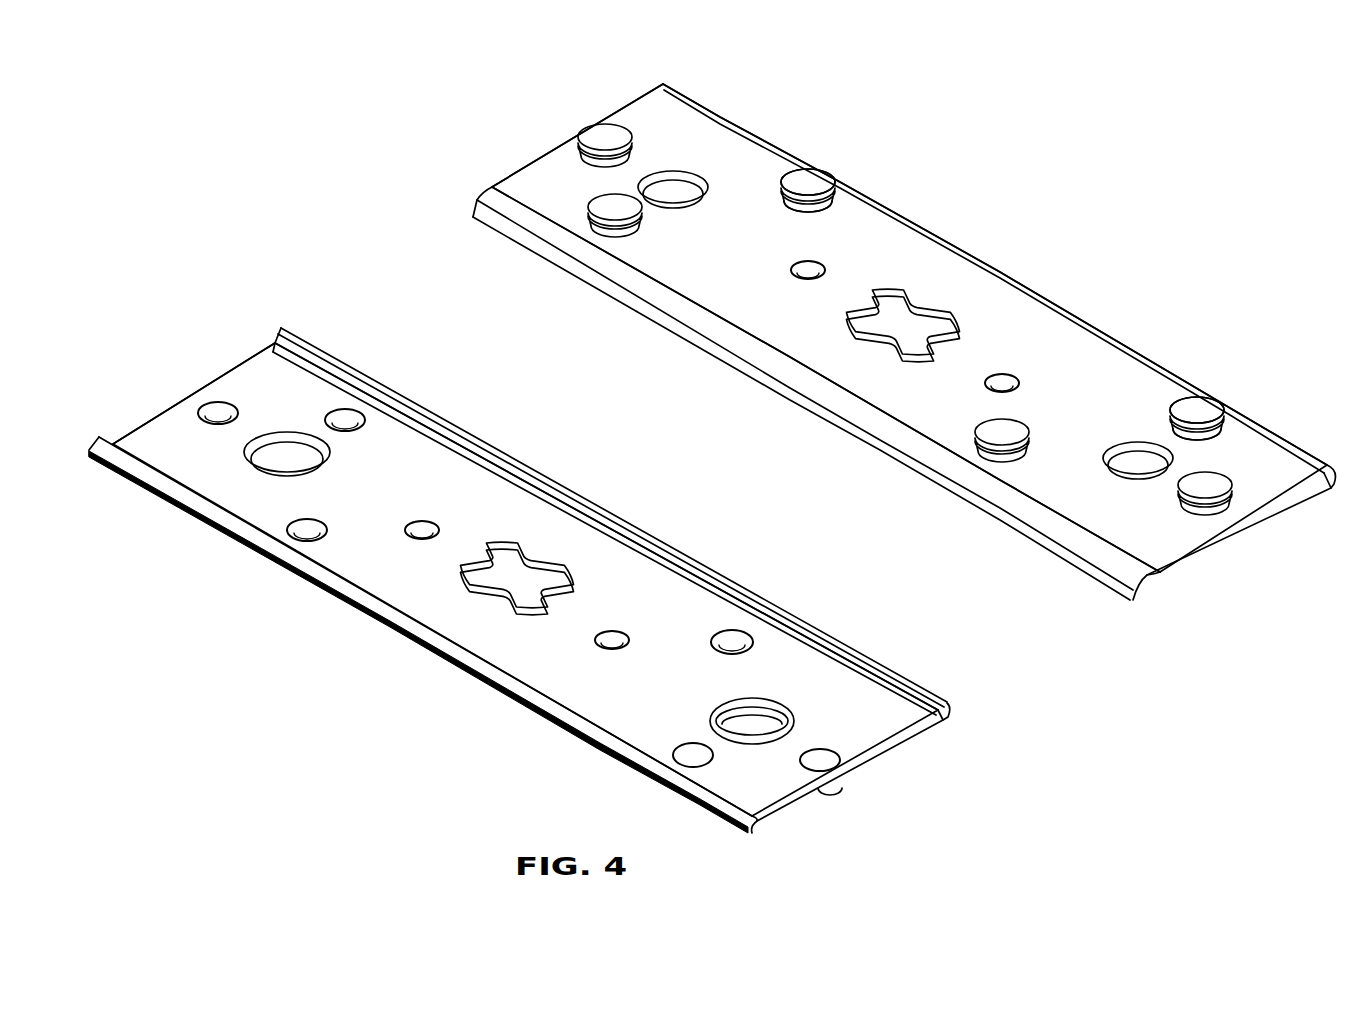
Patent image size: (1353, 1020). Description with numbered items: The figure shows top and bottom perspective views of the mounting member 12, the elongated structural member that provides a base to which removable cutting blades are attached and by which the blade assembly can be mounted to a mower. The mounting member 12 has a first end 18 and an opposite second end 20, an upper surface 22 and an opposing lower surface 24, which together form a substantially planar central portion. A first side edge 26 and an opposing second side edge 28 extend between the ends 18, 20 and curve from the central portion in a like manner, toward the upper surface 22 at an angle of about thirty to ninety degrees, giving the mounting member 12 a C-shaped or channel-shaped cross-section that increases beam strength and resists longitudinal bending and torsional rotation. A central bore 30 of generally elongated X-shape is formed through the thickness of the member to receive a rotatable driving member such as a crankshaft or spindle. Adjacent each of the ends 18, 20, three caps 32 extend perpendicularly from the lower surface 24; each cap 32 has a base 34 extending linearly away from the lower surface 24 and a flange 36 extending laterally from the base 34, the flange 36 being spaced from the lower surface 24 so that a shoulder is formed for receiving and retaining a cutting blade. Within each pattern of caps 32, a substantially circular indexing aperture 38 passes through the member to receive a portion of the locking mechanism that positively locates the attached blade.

The mounting member 12 is at (122, 370).
The first end 18 is at (226, 376).
The second end 20 is at (875, 758).
The upper surface 22 is at (673, 620).
The lower surface 24 is at (1097, 382).
The first side edge 26 is at (335, 597).
The second side edge 28 is at (467, 420).
The central bore 30 is at (522, 596).
The cap 32 is at (605, 205).
The base 34 is at (808, 217).
The flange 36 is at (797, 185).
The indexing aperture 38 is at (293, 463).